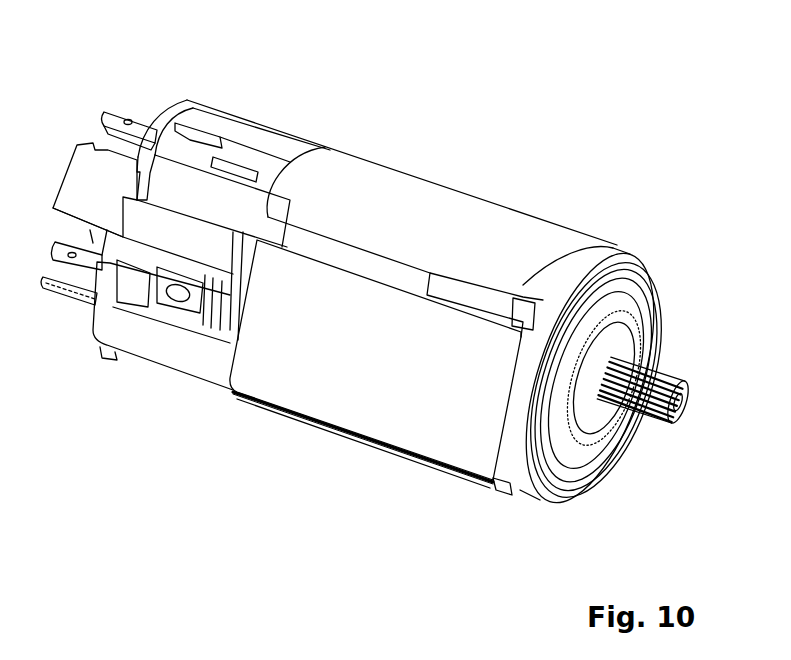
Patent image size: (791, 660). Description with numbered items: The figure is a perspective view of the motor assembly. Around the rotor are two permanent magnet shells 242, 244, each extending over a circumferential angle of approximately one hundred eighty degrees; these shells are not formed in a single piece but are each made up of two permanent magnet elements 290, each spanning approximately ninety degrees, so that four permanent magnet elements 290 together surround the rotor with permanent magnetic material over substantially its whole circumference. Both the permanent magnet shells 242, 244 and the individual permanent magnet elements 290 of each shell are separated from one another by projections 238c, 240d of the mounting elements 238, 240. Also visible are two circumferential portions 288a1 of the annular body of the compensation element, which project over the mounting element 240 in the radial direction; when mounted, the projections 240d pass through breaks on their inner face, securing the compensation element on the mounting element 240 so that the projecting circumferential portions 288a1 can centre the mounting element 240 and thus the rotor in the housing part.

The mounting element 238 is at (153, 347).
The projection 238c is at (315, 237).
The permanent magnet shell 242 is at (348, 317).
The permanent magnet element 290 is at (448, 233).
The permanent magnet shell 244 is at (267, 410).
The projection 240d is at (502, 307).
The mounting element 240 is at (573, 238).
The circumferential portion 288a1 is at (530, 317).